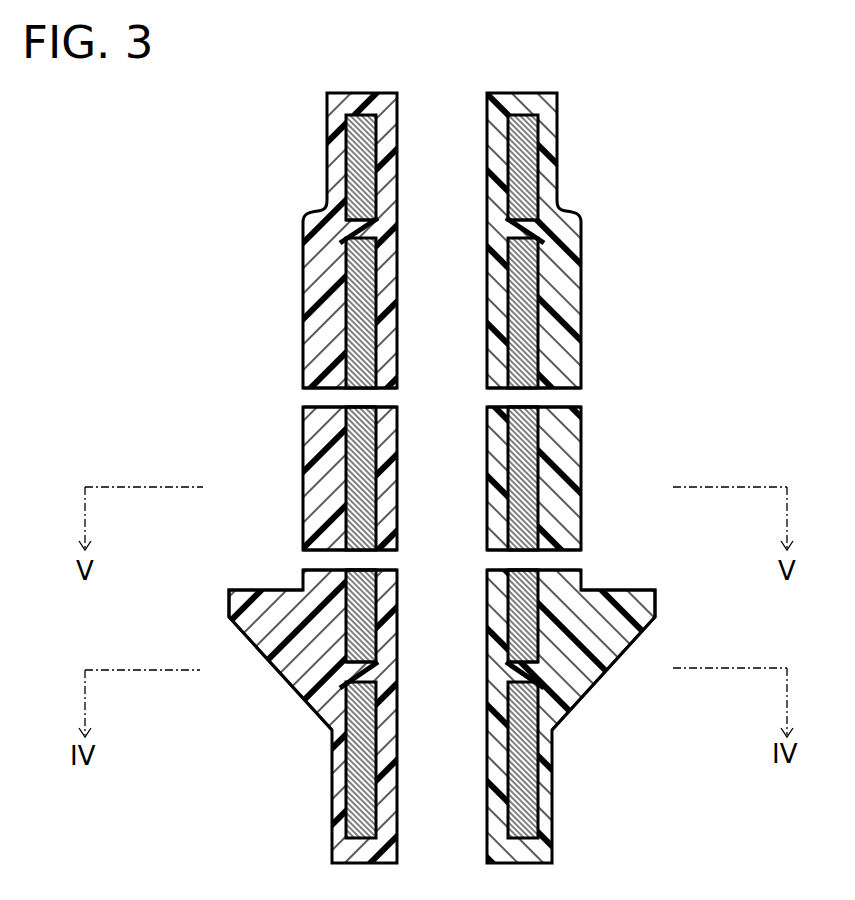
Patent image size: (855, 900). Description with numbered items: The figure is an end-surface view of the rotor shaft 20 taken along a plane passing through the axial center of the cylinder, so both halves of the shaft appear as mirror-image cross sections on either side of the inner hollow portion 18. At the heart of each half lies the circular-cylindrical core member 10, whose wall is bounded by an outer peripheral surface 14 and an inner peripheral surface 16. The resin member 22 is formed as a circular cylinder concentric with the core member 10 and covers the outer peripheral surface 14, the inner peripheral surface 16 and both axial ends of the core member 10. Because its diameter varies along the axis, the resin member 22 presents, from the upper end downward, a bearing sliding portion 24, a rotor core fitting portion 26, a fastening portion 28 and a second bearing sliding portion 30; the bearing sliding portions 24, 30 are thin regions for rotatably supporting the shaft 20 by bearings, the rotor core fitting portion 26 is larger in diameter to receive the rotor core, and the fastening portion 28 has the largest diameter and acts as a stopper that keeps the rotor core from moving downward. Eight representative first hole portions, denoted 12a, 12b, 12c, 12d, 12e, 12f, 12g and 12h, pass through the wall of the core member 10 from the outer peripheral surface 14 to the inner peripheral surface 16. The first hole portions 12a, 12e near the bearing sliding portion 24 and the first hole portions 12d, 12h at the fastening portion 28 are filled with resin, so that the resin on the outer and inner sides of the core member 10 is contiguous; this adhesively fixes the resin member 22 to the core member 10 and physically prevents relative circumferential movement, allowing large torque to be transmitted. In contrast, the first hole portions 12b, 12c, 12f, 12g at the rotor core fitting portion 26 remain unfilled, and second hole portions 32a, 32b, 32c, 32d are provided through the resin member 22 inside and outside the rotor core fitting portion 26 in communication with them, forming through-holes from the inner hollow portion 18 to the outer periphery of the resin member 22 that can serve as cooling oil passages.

The core member 10 is at (530, 113).
The first hole portion 12a is at (536, 221).
The first hole portion 12b is at (522, 407).
The first hole portion 12c is at (522, 570).
The first hole portion 12d is at (532, 673).
The first hole portion 12e is at (349, 231).
The first hole portion 12f is at (363, 407).
The first hole portion 12g is at (363, 570).
The first hole portion 12h is at (353, 670).
The outer peripheral surface 14 is at (555, 125).
The inner peripheral surface 16 is at (507, 142).
The inner hollow portion 18 is at (455, 185).
The shaft 20 is at (697, 127).
The resin member 22 is at (557, 146).
The bearing sliding portion 24 is at (555, 177).
The rotor core fitting portion 26 is at (582, 468).
The fastening portion 28 is at (655, 605).
The bearing sliding portion 30 is at (553, 808).
The second hole portion 32a is at (566, 392).
The second hole portion 32b is at (575, 552).
The second hole portion 32c is at (321, 393).
The second hole portion 32d is at (312, 558).